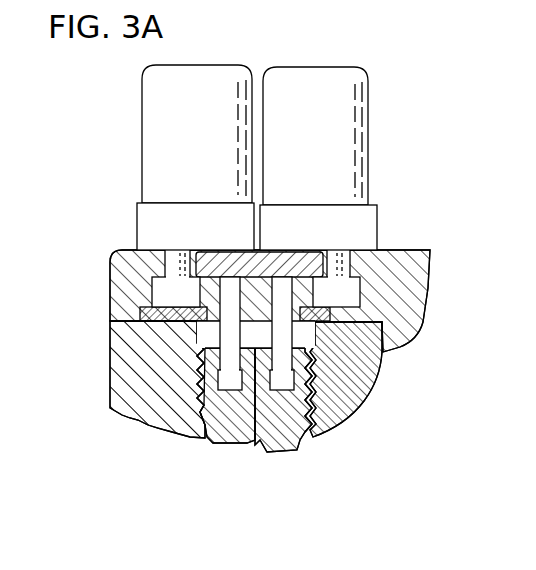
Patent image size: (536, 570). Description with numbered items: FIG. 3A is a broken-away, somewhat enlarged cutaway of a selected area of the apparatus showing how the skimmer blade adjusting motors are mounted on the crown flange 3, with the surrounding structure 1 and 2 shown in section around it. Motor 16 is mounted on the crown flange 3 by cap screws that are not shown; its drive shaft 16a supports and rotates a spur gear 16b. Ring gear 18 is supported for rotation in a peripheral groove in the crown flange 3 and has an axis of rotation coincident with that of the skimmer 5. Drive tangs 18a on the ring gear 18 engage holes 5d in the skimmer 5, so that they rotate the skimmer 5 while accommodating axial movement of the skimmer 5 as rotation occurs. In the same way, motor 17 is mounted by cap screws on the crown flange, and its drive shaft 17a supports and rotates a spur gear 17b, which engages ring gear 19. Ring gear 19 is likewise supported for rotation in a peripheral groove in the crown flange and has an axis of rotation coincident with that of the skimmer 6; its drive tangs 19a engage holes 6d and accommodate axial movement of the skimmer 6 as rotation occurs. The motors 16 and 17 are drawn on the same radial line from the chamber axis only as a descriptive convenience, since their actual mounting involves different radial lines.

The lower housing part 1 is at (144, 436).
The lower housing part 2 is at (348, 430).
The crown flange 3 is at (441, 332).
The skimmer 5 is at (282, 450).
The holes 5d is at (340, 400).
The skimmer 6 is at (223, 445).
The holes 6d is at (213, 385).
The motor 16 is at (319, 148).
The drive shaft 16a is at (336, 262).
The spur gear 16b is at (340, 292).
The motor 17 is at (199, 148).
The drive shaft 17a is at (176, 262).
The spur gear 17b is at (170, 295).
The ring gear 18 is at (383, 352).
The drive tangs 18a is at (335, 374).
The ring gear 19 is at (220, 318).
The drive tangs 19a is at (228, 338).